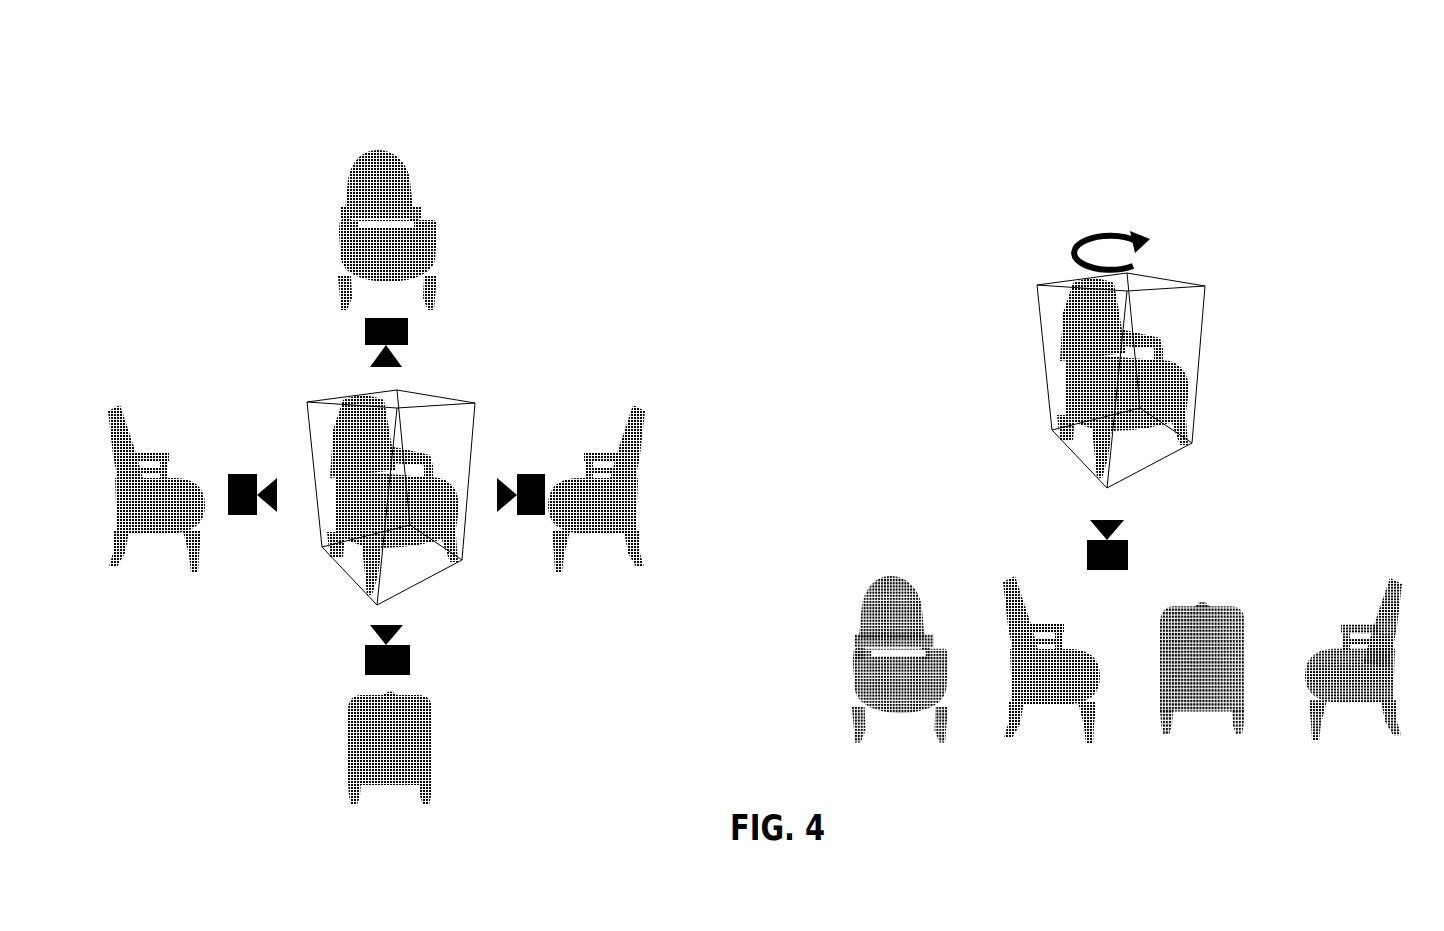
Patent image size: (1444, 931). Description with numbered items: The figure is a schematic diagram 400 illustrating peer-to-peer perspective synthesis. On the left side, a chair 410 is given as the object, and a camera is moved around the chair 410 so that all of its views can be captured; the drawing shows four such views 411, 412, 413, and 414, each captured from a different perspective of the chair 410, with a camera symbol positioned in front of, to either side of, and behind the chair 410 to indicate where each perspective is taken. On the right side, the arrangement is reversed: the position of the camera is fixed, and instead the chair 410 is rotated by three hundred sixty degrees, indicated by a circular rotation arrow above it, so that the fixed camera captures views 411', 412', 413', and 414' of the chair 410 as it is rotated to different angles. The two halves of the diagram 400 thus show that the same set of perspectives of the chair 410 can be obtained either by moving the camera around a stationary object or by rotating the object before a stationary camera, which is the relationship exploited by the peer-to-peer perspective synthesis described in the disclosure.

The schematic diagram 400 is at (226, 56).
The chair 410 is at (430, 397).
The view 411 is at (393, 215).
The view 412 is at (156, 473).
The view 413 is at (620, 473).
The view 414 is at (420, 734).
The view 411' is at (902, 643).
The view 412' is at (1051, 644).
The view 413' is at (1215, 643).
The view 414' is at (1370, 646).